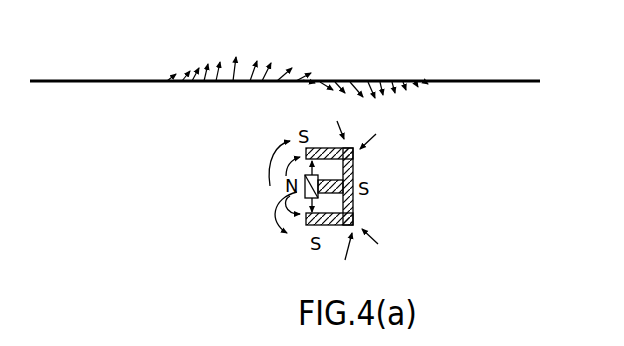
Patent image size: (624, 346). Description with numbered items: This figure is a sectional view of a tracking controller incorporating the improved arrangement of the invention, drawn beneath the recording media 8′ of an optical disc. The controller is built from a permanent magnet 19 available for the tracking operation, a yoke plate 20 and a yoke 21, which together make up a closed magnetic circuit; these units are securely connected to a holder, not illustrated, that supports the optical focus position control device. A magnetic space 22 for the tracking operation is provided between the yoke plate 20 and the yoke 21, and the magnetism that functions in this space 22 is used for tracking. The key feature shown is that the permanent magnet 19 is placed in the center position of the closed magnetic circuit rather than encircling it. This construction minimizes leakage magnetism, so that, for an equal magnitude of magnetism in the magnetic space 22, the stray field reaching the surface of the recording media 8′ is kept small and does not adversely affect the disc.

The recording media of the optical disc 8′ is at (495, 81).
The permanent magnet 19 is at (350, 181).
The yoke plate 20 is at (302, 199).
The yoke 21 is at (353, 158).
The magnetic space 22 is at (305, 167).